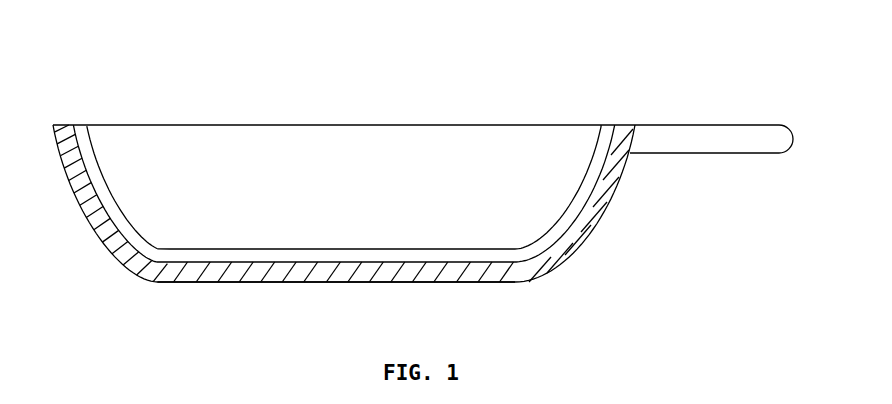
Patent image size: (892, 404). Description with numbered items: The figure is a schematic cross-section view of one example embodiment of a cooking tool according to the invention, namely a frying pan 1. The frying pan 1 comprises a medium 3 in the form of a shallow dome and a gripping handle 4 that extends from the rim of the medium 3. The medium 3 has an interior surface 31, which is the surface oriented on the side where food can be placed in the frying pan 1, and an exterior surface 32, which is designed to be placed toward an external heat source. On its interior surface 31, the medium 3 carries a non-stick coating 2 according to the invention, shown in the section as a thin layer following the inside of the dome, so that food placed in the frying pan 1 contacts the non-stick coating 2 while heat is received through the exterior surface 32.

The frying pan 1 is at (188, 73).
The non-stick coating 2 is at (79, 132).
The medium 3 is at (577, 240).
The interior surface 31 is at (320, 263).
The exterior surface 32 is at (287, 282).
The gripping handle 4 is at (703, 137).